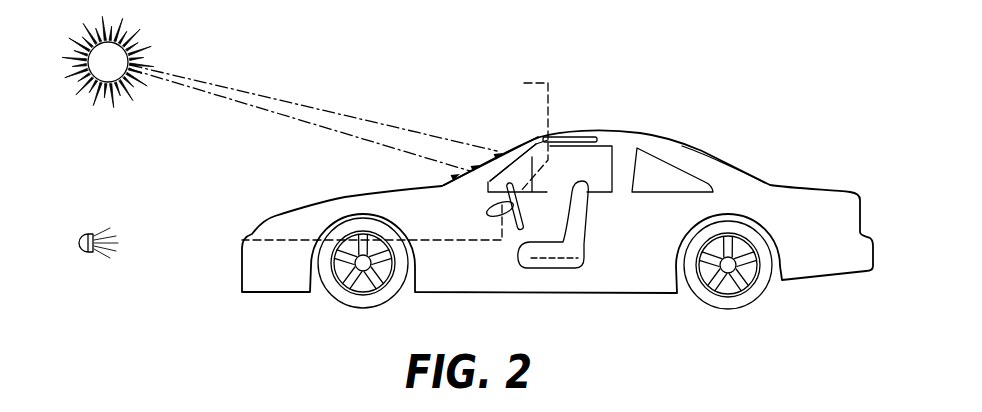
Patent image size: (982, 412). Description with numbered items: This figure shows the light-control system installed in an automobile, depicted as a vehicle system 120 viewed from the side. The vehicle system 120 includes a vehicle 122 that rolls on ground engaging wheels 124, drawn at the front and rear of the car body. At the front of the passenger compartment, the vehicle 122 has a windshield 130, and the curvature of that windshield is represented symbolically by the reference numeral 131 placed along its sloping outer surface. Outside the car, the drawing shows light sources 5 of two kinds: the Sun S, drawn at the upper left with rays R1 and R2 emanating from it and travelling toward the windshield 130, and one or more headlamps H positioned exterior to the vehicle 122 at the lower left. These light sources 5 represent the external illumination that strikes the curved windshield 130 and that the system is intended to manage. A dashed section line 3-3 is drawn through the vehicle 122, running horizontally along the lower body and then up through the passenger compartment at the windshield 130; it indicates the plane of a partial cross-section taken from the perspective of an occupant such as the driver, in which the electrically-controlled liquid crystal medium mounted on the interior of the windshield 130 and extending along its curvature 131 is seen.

The vehicle system 120 is at (778, 83).
The vehicle 122 is at (581, 136).
The ground engaging wheels 124 is at (341, 306).
The windshield 130 is at (452, 178).
The curvature 131 is at (514, 149).
The section line 3- 3 is at (513, 87).
The ray R1 is at (353, 118).
The ray R2 is at (267, 110).
The light sources 5 is at (121, 146).
The Sun S is at (108, 61).
The headlamps H is at (88, 232).